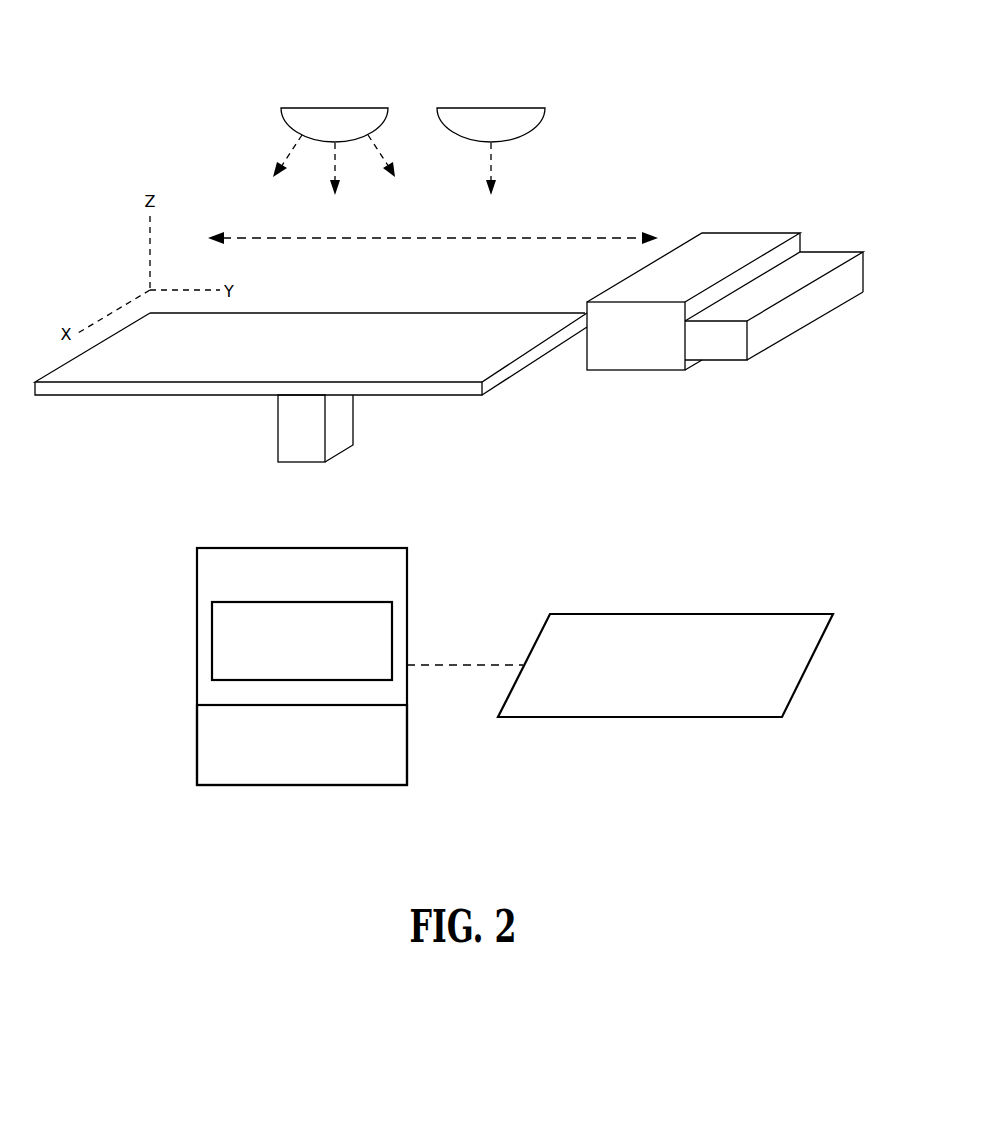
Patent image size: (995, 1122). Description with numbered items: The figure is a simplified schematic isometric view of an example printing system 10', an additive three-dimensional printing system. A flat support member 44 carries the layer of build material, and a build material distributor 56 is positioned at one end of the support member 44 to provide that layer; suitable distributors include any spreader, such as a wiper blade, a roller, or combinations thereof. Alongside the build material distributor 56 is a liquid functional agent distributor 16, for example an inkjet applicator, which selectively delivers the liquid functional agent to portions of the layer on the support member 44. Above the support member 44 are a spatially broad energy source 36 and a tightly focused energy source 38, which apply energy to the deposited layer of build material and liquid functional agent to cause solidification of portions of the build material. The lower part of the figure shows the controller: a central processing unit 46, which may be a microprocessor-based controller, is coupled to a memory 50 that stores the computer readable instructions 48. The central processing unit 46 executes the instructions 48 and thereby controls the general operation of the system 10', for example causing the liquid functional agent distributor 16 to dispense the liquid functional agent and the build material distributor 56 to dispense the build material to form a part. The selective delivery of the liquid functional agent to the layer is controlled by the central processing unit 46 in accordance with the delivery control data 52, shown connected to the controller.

The printing system 10' is at (692, 41).
The spatially broad energy source 36 is at (335, 108).
The tightly focused energy source 38 is at (491, 108).
The support member 44 is at (368, 313).
The build material distributor 56 is at (752, 233).
The liquid functional agent distributor 16 is at (830, 252).
The memory 50 is at (213, 575).
The computer readable instructions 48 is at (213, 641).
The central processing unit 46 is at (197, 745).
The delivery control data 52 is at (690, 614).